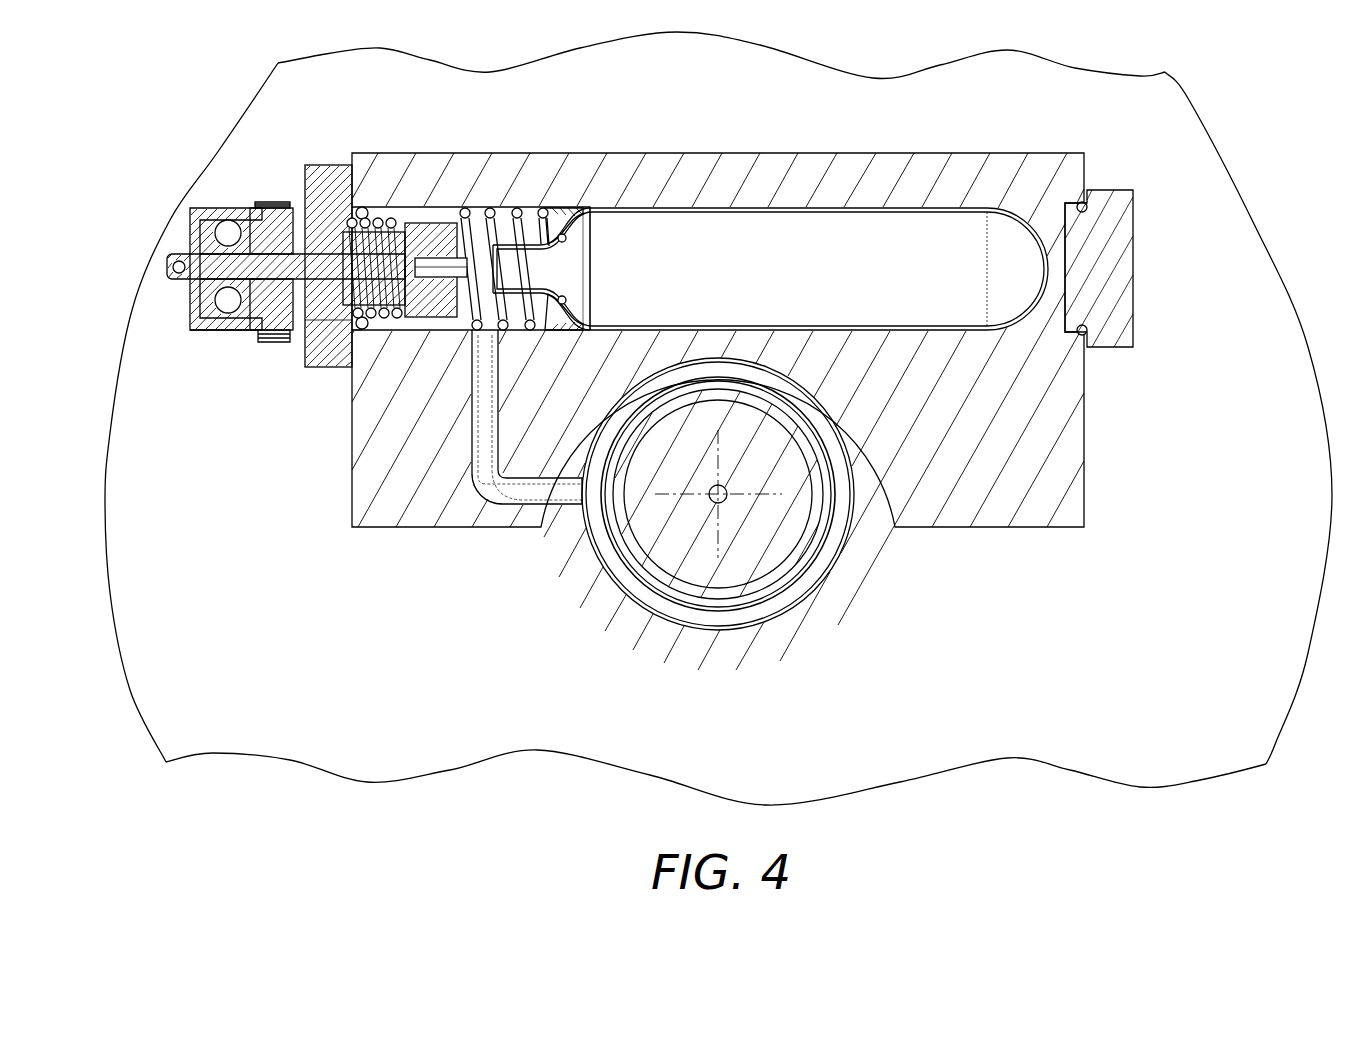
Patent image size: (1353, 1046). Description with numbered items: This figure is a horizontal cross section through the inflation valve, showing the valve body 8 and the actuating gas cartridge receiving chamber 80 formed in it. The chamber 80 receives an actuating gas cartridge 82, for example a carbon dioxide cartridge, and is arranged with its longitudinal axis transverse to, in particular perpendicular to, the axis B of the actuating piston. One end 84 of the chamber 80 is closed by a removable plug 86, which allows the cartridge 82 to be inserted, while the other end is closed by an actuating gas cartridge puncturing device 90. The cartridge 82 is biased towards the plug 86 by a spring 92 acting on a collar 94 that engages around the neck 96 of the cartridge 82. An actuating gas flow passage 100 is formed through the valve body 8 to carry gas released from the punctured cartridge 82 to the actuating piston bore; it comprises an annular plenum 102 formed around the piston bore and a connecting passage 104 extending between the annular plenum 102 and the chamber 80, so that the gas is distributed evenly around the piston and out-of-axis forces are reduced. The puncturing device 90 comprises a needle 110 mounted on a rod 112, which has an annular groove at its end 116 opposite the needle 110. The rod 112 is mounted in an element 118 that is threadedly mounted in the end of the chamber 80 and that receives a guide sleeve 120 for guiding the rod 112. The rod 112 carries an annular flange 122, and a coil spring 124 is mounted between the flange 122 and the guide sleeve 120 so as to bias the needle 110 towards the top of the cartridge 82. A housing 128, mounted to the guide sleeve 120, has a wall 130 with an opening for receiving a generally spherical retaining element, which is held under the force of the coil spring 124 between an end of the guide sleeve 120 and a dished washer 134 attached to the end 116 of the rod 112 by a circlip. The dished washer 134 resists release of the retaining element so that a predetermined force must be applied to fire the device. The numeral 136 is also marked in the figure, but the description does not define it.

The valve body 8 is at (1060, 518).
The actuating gas cartridge receiving chamber 80 is at (477, 208).
The actuating gas cartridge 82 is at (917, 232).
The end of the actuating gas receiving chamber 84 is at (1050, 162).
The removable plug 86 is at (1128, 266).
The actuating gas cartridge puncturing device 90 is at (268, 251).
The spring 92 is at (517, 210).
The collar 94 is at (563, 212).
The neck of the actuating gas cartridge 96 is at (607, 212).
The actuating gas flow passage 100 is at (523, 512).
The annular plenum 102 is at (620, 573).
The connecting passage 104 is at (486, 482).
The needle 110 is at (452, 233).
The rod 112 is at (280, 253).
The end of the rod 116 is at (165, 265).
The element 118 is at (333, 172).
The guide sleeve 120 is at (305, 325).
The annular flange 122 is at (385, 210).
The coil spring 124 is at (373, 330).
The housing 128 is at (252, 333).
The wall 130 is at (203, 333).
The washer 134 is at (205, 212).
The detent ball 136 is at (193, 283).
The axis of the actuating piston B is at (727, 498).